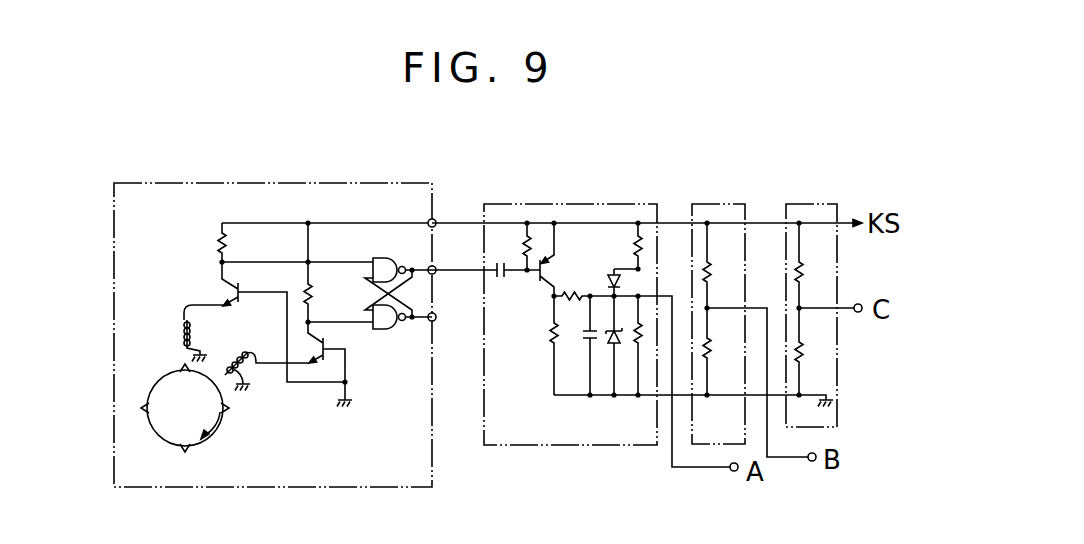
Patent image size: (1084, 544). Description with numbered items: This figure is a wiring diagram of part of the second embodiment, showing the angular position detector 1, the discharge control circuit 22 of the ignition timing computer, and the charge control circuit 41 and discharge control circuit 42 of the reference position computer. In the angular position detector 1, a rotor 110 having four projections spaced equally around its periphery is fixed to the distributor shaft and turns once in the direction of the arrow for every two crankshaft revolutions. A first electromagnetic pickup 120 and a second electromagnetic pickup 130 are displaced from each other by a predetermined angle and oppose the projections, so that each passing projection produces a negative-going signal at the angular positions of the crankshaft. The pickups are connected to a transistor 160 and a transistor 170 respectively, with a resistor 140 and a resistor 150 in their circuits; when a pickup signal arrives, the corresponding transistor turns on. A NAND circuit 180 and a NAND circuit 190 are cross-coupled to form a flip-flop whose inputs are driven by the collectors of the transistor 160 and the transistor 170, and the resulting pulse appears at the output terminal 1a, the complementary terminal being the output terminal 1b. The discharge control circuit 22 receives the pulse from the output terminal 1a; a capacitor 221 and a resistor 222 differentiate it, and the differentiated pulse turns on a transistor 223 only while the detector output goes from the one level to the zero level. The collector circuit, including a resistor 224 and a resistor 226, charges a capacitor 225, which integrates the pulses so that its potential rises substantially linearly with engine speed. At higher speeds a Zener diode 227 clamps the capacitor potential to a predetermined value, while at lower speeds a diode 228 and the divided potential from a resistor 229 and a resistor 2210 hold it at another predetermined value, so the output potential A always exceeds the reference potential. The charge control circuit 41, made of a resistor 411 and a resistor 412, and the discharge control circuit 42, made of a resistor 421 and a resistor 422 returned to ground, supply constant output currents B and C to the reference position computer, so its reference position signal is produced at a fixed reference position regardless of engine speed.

The angular position detector 1 is at (364, 489).
The output terminal 1a is at (428, 266).
The output terminal 1b is at (446, 300).
The rotor 110 is at (209, 442).
The first electromagnetic pickup 120 is at (182, 335).
The second electromagnetic pickup 130 is at (248, 372).
The resistor 140 is at (217, 240).
The resistor 150 is at (301, 296).
The transistor 160 is at (233, 295).
The transistor 170 is at (313, 365).
The NAND circuit 180 is at (378, 258).
The NAND circuit 190 is at (392, 332).
The discharge control circuit 22 is at (542, 447).
The capacitor 221 is at (497, 262).
The resistor 222 is at (521, 243).
The transistor 223 is at (553, 268).
The resistor 224 is at (547, 334).
The capacitor 225 is at (581, 339).
The resistor 226 is at (564, 296).
The Zener diode 227 is at (604, 322).
The diode 228 is at (616, 271).
The resistor 229 is at (642, 243).
The resistor 2210 is at (633, 345).
The charge control circuit 41 is at (710, 446).
The resistor 411 is at (713, 266).
The resistor 412 is at (714, 352).
The discharge control circuit 42 is at (841, 402).
The resistor 421 is at (806, 258).
The resistor 422 is at (807, 352).